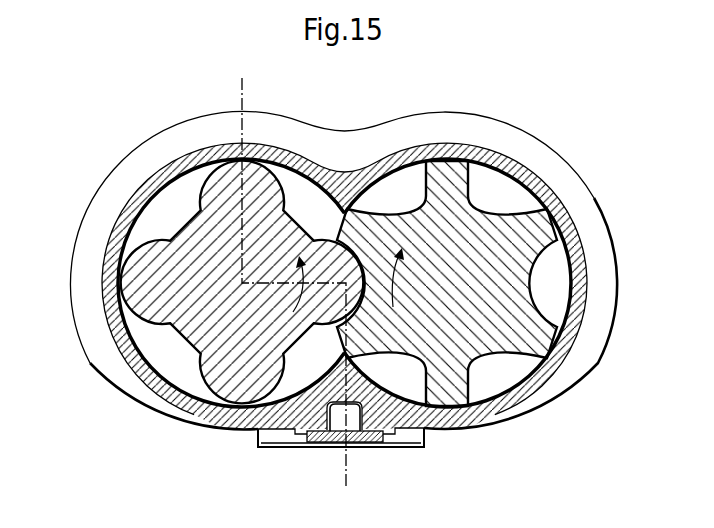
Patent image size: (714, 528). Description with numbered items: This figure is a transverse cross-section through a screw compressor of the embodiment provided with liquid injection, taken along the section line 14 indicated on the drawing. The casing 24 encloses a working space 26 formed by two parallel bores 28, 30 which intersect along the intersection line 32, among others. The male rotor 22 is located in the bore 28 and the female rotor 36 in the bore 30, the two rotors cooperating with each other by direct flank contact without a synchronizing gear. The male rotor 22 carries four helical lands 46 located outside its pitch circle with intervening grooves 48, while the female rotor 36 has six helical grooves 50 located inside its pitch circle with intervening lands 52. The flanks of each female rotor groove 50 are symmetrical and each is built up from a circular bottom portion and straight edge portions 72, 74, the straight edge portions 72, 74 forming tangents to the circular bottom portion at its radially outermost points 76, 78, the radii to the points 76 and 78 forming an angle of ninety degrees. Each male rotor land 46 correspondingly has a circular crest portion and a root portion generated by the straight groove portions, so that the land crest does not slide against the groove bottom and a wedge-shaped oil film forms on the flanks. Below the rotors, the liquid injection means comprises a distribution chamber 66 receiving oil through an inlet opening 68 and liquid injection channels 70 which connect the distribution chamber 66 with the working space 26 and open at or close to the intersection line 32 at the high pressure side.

The section line 14- 14 is at (309, 489).
The male rotor 22 is at (172, 288).
The casing 24 is at (498, 153).
The working space 26 is at (513, 195).
The bore 28 is at (153, 213).
The bore 30 is at (553, 264).
The intersection line 32 is at (378, 360).
The female rotor 36 is at (503, 283).
The helical lands 46 is at (141, 264).
The grooves 48 is at (145, 337).
The helical grooves 50 is at (508, 368).
The lands 52 is at (540, 337).
The distribution chamber 66 is at (350, 420).
The inlet opening 68 is at (340, 437).
The liquid injection channels 70 is at (257, 431).
The straight edge portion 72 is at (430, 170).
The straight edge portion 74 is at (378, 190).
The radially outermost point 76 is at (408, 200).
The radially outermost point 78 is at (380, 200).